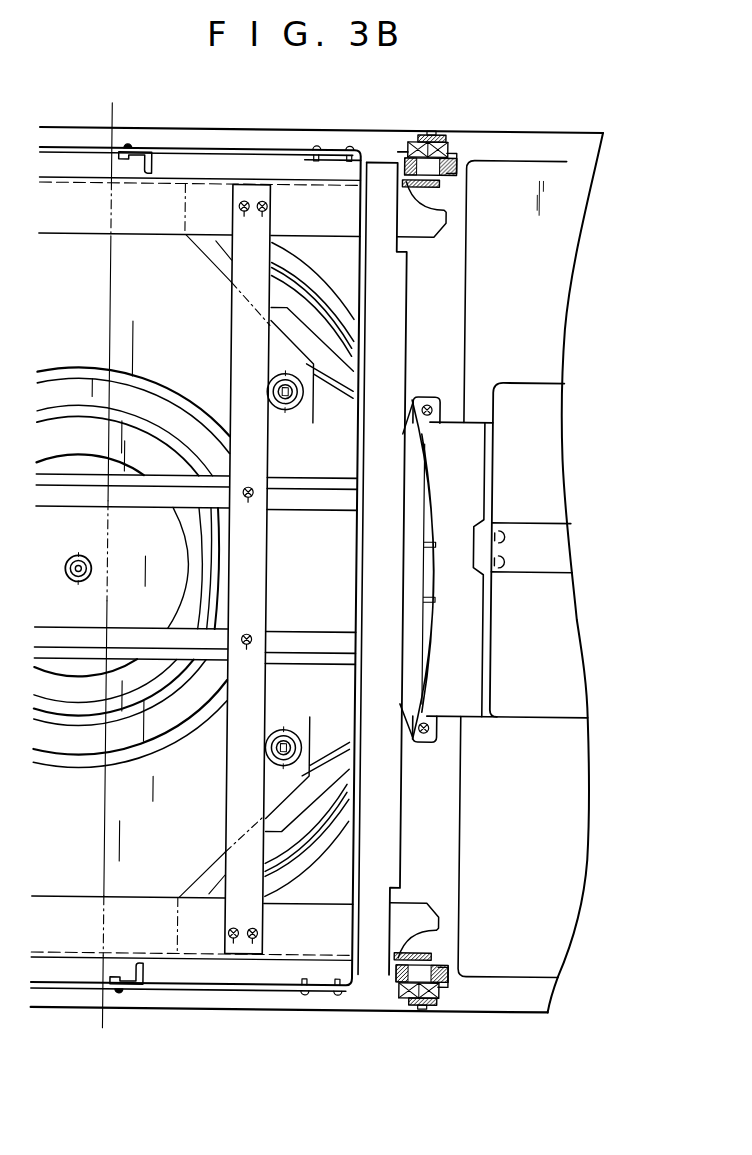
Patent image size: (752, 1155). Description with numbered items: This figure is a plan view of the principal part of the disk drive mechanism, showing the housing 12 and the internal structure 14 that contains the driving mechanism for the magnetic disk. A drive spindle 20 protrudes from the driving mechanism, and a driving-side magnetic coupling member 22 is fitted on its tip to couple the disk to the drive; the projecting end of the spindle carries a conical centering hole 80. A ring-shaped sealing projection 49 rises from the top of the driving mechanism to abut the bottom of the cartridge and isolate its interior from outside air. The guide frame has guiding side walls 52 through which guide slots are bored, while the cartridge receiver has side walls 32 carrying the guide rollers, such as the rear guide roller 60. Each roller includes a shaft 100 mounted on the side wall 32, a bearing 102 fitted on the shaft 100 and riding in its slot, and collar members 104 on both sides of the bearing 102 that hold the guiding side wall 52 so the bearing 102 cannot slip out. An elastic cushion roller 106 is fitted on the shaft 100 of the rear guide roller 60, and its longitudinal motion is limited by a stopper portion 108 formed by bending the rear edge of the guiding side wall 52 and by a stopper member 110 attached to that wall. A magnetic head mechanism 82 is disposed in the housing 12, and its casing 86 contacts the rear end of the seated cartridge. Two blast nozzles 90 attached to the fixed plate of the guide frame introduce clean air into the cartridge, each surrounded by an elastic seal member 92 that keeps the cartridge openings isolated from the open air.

The housing 12 is at (529, 114).
The internal structure 14 is at (545, 277).
The drive spindle 20 is at (81, 560).
The driving-side magnetic coupling member 22 is at (195, 567).
The side wall 32 is at (221, 958).
The sealing projection 49 is at (147, 740).
The guiding side wall 52 is at (193, 146).
The rear guide roller 60 is at (445, 575).
The conical centering hole 80 is at (84, 581).
The magnetic head mechanism 82 is at (508, 735).
The casing 86 is at (452, 716).
The blast nozzle 90 is at (355, 270).
The seal member 92 is at (350, 310).
The shaft 100 is at (420, 180).
The bearing 102 is at (440, 135).
The collar member 104 is at (448, 144).
The cushion roller 106 is at (460, 174).
The stopper portion 108 is at (458, 163).
The stopper member 110 is at (151, 160).